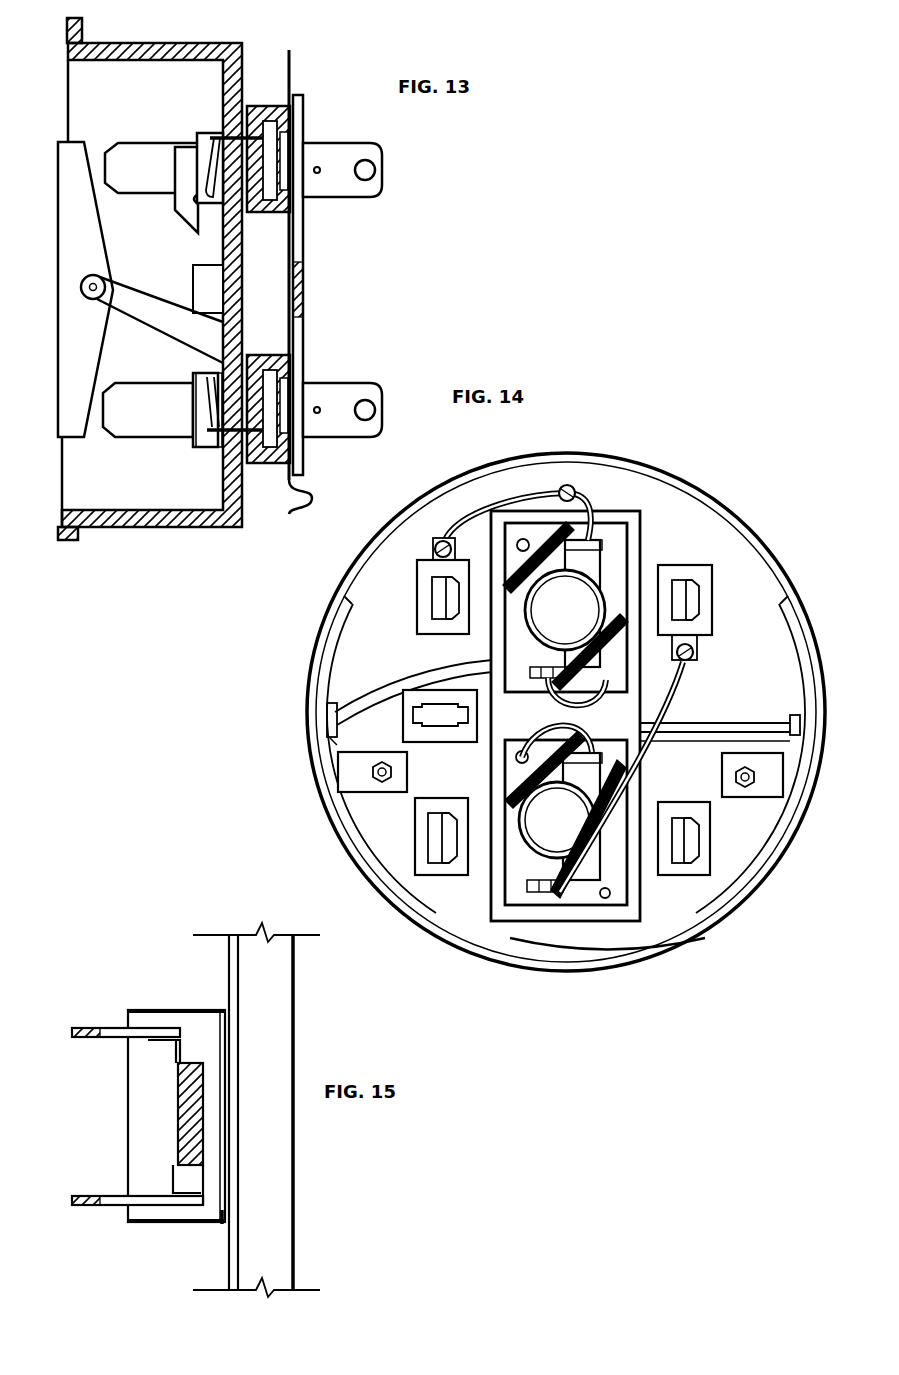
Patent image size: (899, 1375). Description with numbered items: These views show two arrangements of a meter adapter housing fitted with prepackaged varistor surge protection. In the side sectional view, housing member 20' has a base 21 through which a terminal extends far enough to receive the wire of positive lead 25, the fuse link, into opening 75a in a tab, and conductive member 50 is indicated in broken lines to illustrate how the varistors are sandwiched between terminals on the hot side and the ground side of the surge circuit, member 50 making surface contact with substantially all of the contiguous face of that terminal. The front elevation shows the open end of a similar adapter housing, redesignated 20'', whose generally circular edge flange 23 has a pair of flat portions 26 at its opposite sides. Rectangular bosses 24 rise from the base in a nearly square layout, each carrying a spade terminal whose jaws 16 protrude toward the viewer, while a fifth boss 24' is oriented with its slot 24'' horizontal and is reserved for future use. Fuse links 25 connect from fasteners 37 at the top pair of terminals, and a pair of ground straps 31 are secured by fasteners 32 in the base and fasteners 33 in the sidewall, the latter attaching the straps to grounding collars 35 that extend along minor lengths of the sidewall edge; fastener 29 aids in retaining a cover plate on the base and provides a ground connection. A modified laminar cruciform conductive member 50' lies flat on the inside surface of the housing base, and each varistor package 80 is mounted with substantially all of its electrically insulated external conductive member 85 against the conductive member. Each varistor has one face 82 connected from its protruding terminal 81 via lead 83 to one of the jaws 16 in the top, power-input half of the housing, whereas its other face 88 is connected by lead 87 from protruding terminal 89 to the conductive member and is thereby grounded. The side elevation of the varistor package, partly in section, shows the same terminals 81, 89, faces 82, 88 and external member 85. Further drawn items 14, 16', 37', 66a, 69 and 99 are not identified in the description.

In FIG. 13, the terminal blade 14 is at (335, 185).
In FIG. 14, the jaws 16 is at (573, 753).
In FIG. 13, the circuit breaker 16' is at (149, 273).
In FIG. 13, the adapter housing member 20' is at (150, 303).
In FIG. 14, the adapter housing 20'' is at (566, 709).
In FIG. 13, the base 21 is at (238, 250).
In FIG. 14, the base 21 is at (697, 769).
In FIG. 15, the base 21 is at (258, 1178).
In FIG. 14, the edge flange 23 is at (754, 558).
In FIG. 14, the rectangular bosses 24 is at (549, 709).
In FIG. 14, the fifth boss 24' is at (449, 728).
In FIG. 14, the slot 24'' is at (445, 758).
In FIG. 13, the fuse link 25 is at (207, 155).
In FIG. 14, the flat portions 26 is at (826, 688).
In FIG. 14, the fastener 29 is at (575, 487).
In FIG. 13, the ground straps 31 is at (170, 322).
In FIG. 14, the ground straps 31 is at (338, 737).
In FIG. 14, the fasteners 32 is at (383, 786).
In FIG. 14, the fasteners 33 is at (339, 686).
In FIG. 13, the grounding collars 35 is at (85, 253).
In FIG. 14, the grounding collars 35 is at (341, 628).
In FIG. 14, the fasteners 37 is at (714, 646).
In FIG. 14, the screw terminal 37' is at (422, 515).
In FIG. 13, the conductive member 50 is at (334, 283).
In FIG. 14, the laminar cruciform conductive member 50' is at (600, 682).
In FIG. 15, the laminar cruciform conductive member 50' is at (205, 1112).
In FIG. 13, the panel 66a is at (291, 56).
In FIG. 13, the insulator block 69 is at (270, 118).
In FIG. 13, the opening 75a is at (218, 138).
In FIG. 15, the prepackaged varistor means 80 is at (100, 1105).
In FIG. 14, the protruding terminal 81 is at (598, 547).
In FIG. 15, the protruding terminal 81 is at (110, 1030).
In FIG. 15, the varistor face 82 is at (166, 1057).
In FIG. 14, the lead 83 is at (519, 503).
In FIG. 15, the external conductive member 85 is at (222, 1222).
In FIG. 14, the lead 87 is at (584, 707).
In FIG. 15, the varistor face 88 is at (190, 1143).
In FIG. 14, the protruding terminal 89 is at (535, 688).
In FIG. 15, the protruding terminal 89 is at (120, 1204).
In FIG. 15, the contact clip 99 is at (180, 1176).